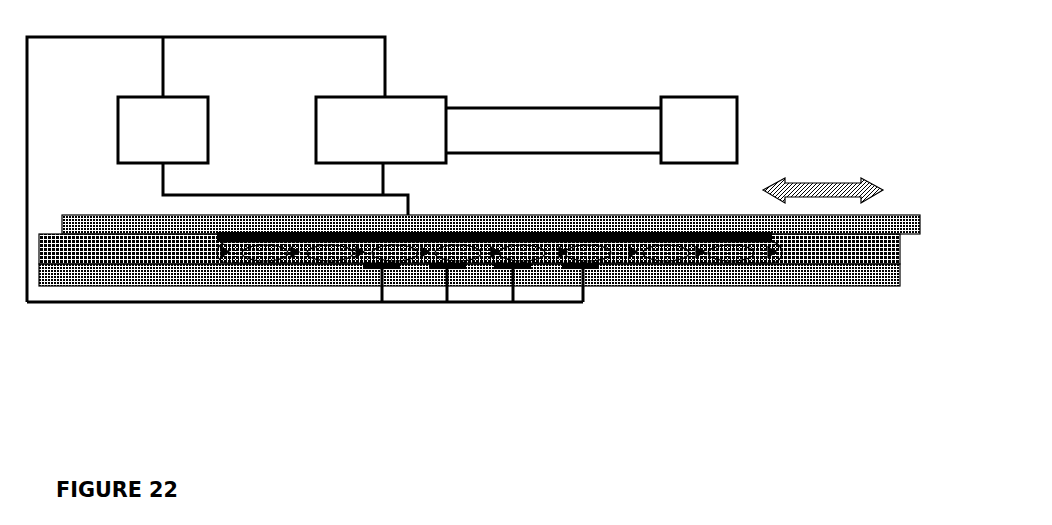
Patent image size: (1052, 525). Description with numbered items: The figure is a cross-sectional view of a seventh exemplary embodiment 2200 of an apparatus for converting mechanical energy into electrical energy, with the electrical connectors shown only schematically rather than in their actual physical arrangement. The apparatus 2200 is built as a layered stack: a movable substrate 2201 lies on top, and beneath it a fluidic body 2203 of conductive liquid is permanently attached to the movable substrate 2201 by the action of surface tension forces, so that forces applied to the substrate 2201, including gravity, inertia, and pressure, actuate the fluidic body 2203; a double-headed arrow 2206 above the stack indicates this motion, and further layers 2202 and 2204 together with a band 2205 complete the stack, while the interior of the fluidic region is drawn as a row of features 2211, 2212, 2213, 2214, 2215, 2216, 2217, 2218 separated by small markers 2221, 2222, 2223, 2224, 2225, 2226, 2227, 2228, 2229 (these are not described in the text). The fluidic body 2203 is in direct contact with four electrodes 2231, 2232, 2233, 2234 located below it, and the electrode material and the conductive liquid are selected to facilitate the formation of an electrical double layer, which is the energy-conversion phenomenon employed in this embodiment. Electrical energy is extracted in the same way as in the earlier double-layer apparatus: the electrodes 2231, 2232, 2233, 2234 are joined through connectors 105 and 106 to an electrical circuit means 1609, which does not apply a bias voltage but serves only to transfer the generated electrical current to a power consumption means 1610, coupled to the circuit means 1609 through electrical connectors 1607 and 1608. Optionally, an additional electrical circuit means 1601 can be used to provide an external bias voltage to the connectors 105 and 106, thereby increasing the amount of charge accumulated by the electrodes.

The connector 106 is at (38, 135).
The connector 105 is at (415, 197).
The additional electrical circuit means 1601 is at (213, 117).
The electrical connector 1607 is at (525, 103).
The electrical connector 1608 is at (525, 143).
The electrical circuit means 1609 is at (425, 88).
The power consumption means 1610 is at (698, 93).
The apparatus 2200 is at (835, 50).
The movable substrate 2201 is at (672, 203).
The bottom substrate layer 2202 is at (85, 288).
The fluidic body 2203 is at (213, 258).
The dielectric layer end portion 2204 is at (817, 255).
The top electrode 2205 is at (537, 233).
The direction of droplet movement 2206 is at (820, 175).
The droplet 2211 is at (265, 253).
The droplet 2212 is at (330, 253).
The droplet 2213 is at (395, 253).
The droplet 2214 is at (458, 253).
The droplet 2215 is at (522, 253).
The droplet 2216 is at (588, 253).
The droplet 2217 is at (666, 253).
The droplet 2218 is at (731, 253).
The flow direction indicator 2221 is at (235, 259).
The flow direction indicator 2222 is at (305, 259).
The flow direction indicator 2223 is at (370, 259).
The flow direction indicator 2224 is at (435, 259).
The flow direction indicator 2225 is at (505, 259).
The flow direction indicator 2226 is at (573, 259).
The flow direction indicator 2227 is at (643, 259).
The flow direction indicator 2228 is at (710, 259).
The flow direction indicator 2229 is at (782, 259).
The electrode 2231 is at (398, 268).
The electrode 2232 is at (465, 268).
The electrode 2233 is at (529, 268).
The electrode 2234 is at (597, 268).